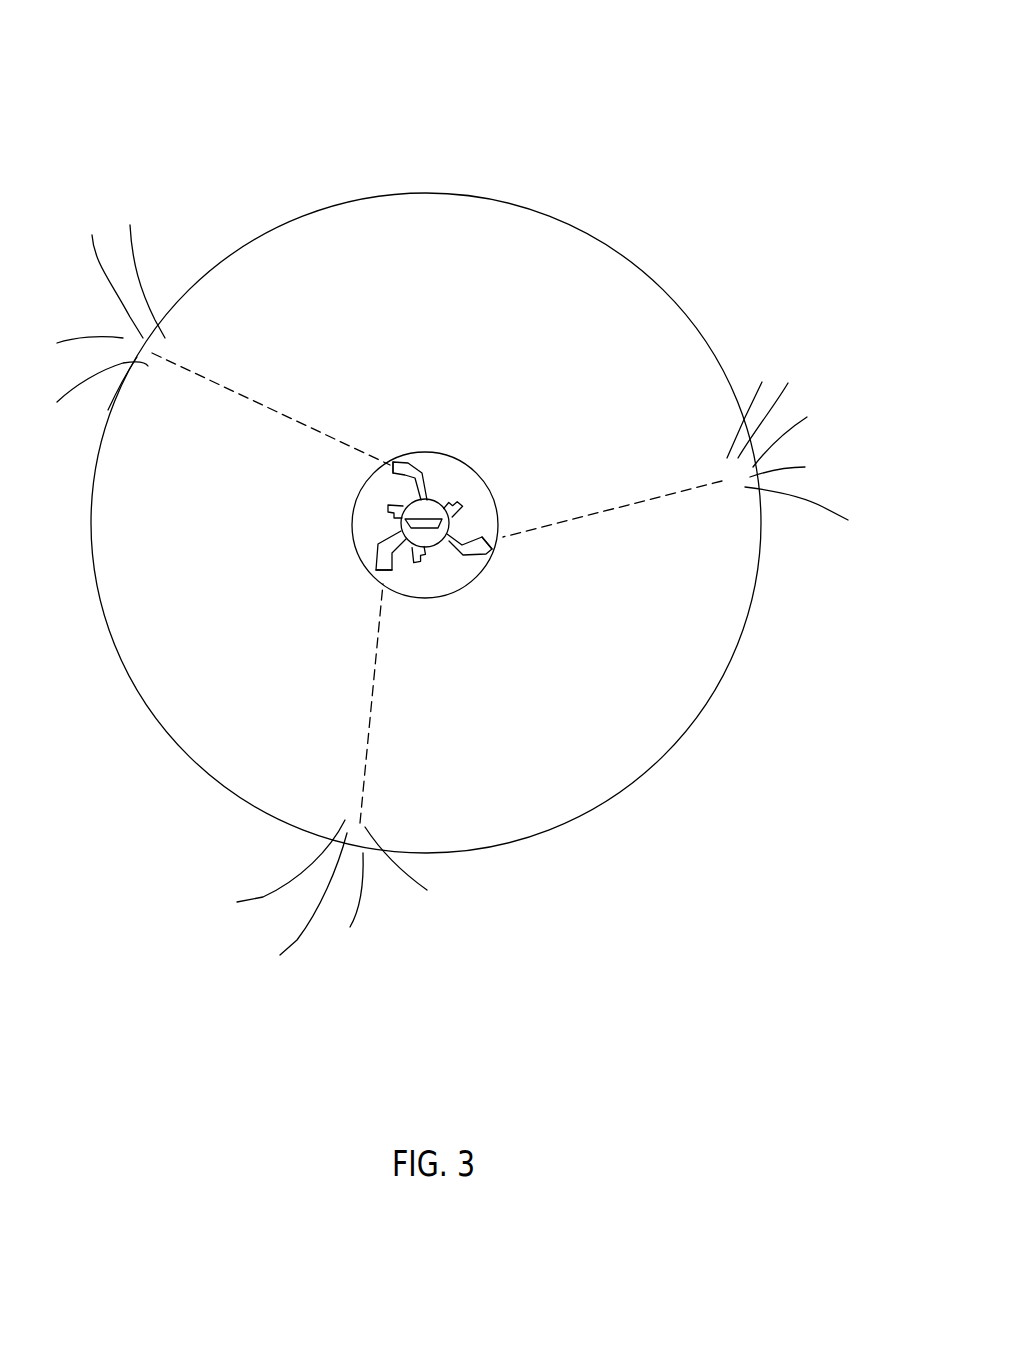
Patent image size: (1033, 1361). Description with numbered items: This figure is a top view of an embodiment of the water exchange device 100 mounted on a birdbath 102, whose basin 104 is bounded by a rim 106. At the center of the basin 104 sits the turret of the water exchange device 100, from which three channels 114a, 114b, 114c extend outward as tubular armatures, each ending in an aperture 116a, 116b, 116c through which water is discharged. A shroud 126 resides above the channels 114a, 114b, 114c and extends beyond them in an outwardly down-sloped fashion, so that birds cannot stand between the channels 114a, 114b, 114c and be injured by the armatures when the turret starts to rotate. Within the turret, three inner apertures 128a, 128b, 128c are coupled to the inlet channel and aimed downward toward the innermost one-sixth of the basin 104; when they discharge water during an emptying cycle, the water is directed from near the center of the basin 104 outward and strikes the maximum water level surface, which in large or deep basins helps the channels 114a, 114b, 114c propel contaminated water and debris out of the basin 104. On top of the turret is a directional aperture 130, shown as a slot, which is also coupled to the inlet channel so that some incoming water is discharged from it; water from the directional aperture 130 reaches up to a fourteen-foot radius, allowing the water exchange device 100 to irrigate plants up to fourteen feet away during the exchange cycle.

The water exchange device 100 is at (356, 390).
The birdbath 102 is at (630, 98).
The basin 104 is at (640, 308).
The rim 106 is at (381, 180).
The channel 114a is at (378, 556).
The channel 114b is at (419, 472).
The channel 114c is at (482, 556).
The aperture 116a is at (386, 584).
The aperture 116b is at (384, 467).
The aperture 116c is at (505, 532).
The shroud 126 is at (494, 500).
The inner aperture 128a is at (428, 562).
The inner aperture 128b is at (388, 512).
The inner aperture 128c is at (464, 508).
The directional aperture 130 is at (428, 521).